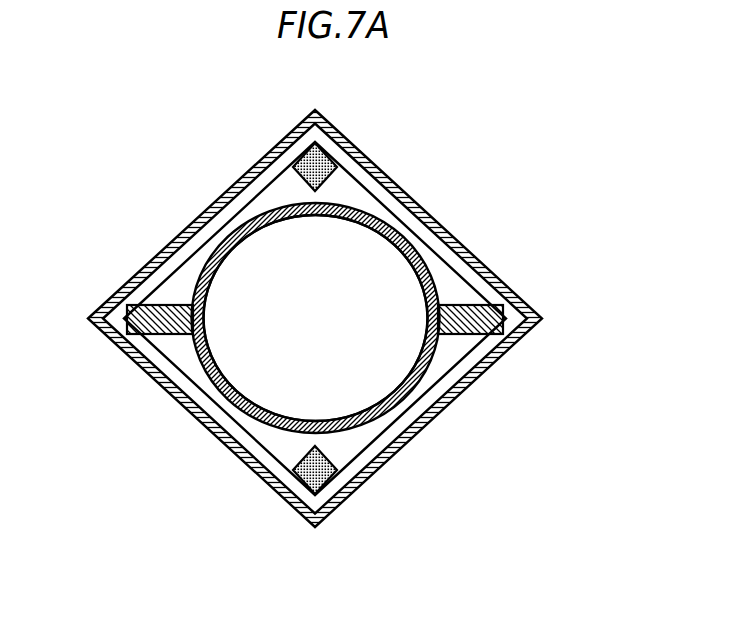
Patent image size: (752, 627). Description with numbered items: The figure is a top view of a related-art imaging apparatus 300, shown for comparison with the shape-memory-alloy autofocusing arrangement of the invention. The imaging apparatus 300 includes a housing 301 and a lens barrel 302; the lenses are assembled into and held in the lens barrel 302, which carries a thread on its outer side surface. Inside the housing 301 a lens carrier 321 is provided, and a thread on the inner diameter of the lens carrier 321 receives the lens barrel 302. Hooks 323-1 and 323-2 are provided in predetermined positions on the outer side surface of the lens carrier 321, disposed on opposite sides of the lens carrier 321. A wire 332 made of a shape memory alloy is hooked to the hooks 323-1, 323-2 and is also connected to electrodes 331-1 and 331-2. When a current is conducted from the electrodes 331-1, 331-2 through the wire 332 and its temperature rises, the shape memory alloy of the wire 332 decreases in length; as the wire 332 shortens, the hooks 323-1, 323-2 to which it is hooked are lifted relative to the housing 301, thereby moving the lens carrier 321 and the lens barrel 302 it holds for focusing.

The imaging apparatus 300 is at (383, 167).
The housing 301 is at (457, 237).
The lens barrel 302 is at (380, 343).
The lens carrier 321 is at (368, 418).
The hook 323-1 is at (107, 338).
The hook 323-2 is at (525, 303).
The electrode 331-1 is at (312, 170).
The electrode 331-2 is at (320, 472).
The wire 332 is at (230, 442).